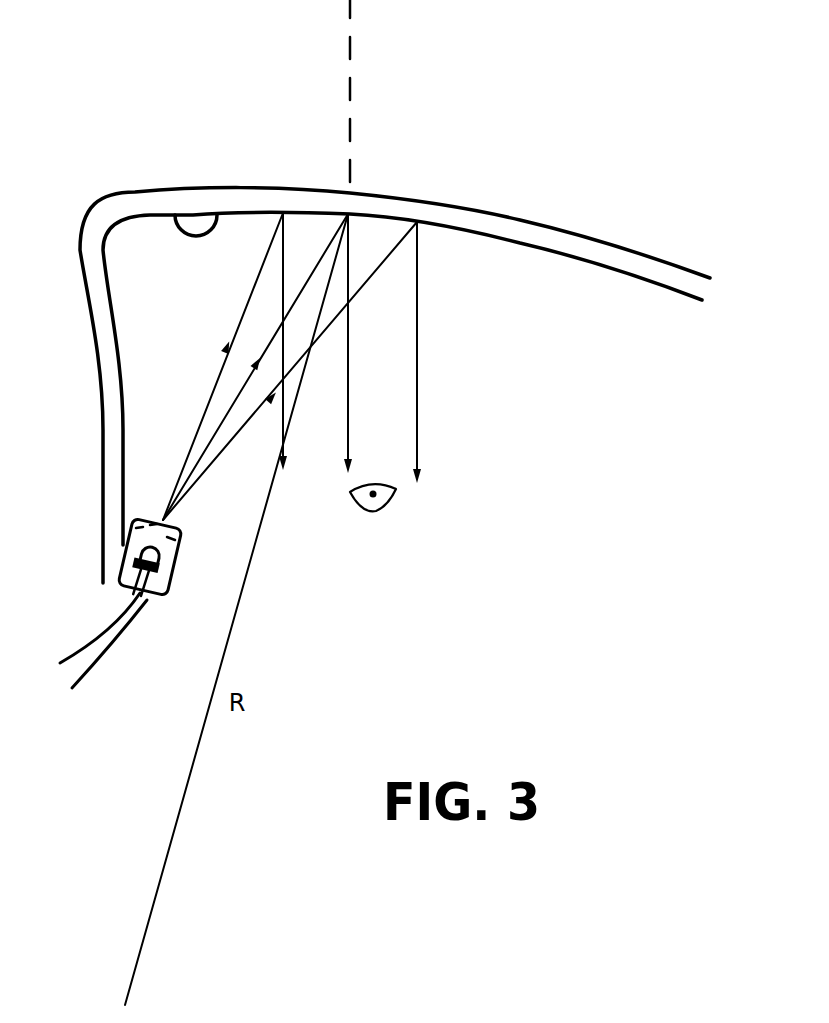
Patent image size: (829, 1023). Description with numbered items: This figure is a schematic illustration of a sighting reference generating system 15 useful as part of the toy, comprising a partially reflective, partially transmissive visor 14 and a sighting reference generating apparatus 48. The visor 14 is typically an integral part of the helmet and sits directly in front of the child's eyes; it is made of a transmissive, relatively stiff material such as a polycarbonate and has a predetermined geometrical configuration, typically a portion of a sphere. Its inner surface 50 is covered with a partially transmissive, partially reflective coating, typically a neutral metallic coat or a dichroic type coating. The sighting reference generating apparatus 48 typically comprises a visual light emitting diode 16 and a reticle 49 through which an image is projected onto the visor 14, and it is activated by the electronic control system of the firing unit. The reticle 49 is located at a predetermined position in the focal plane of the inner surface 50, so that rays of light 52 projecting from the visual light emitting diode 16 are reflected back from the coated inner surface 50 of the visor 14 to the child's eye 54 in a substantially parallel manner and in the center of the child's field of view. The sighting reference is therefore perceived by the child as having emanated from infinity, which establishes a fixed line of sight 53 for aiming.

The visor 14 is at (565, 238).
The sighting reference generating system 15 is at (610, 349).
The visual light emitting diode 16 is at (147, 553).
The sighting reference generating apparatus 48 is at (163, 593).
The reticle 49 is at (147, 517).
The inner surface 50 is at (173, 215).
The rays of light 52 is at (206, 308).
The line of sight 53 is at (350, 100).
The eye 54 is at (410, 497).